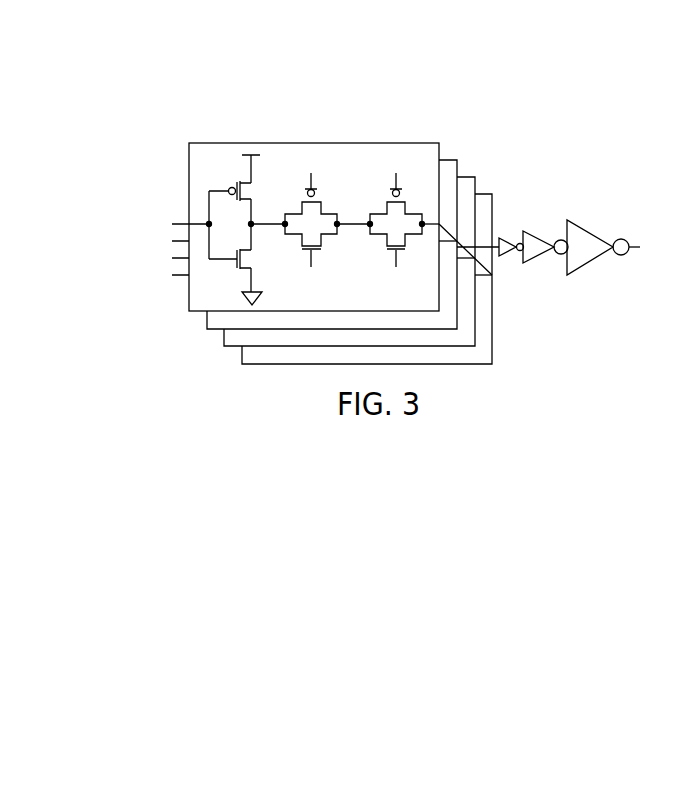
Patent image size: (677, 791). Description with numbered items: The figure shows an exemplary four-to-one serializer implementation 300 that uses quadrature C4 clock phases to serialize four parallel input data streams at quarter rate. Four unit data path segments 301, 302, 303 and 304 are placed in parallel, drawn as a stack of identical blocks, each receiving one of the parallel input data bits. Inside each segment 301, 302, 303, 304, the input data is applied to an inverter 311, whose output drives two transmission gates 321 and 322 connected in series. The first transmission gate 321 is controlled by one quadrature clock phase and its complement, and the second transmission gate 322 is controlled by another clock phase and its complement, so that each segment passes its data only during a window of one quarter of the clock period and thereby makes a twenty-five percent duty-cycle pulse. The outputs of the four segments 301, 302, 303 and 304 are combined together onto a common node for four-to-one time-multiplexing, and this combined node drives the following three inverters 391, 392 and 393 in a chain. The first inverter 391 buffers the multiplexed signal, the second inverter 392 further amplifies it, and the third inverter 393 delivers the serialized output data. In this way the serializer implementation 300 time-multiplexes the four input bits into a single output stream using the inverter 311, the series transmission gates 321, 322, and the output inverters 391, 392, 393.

The 4:1 serializer implementation 300 is at (346, 36).
The segment 301 is at (439, 143).
The segment 302 is at (457, 160).
The segment 303 is at (475, 177).
The segment 304 is at (492, 194).
The inverter 311 is at (233, 130).
The transmission gate 321 is at (310, 132).
The transmission gate 322 is at (385, 130).
The inverter 391 is at (503, 262).
The inverter 392 is at (537, 261).
The inverter 393 is at (593, 262).